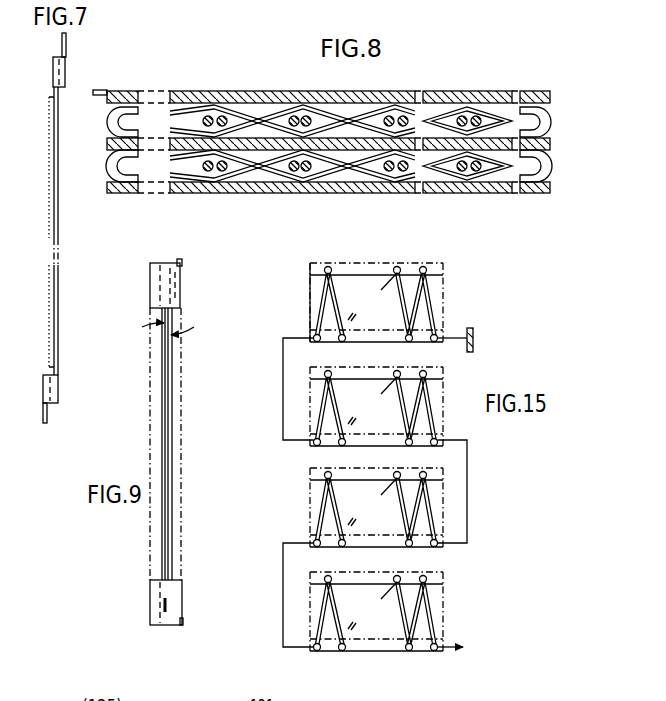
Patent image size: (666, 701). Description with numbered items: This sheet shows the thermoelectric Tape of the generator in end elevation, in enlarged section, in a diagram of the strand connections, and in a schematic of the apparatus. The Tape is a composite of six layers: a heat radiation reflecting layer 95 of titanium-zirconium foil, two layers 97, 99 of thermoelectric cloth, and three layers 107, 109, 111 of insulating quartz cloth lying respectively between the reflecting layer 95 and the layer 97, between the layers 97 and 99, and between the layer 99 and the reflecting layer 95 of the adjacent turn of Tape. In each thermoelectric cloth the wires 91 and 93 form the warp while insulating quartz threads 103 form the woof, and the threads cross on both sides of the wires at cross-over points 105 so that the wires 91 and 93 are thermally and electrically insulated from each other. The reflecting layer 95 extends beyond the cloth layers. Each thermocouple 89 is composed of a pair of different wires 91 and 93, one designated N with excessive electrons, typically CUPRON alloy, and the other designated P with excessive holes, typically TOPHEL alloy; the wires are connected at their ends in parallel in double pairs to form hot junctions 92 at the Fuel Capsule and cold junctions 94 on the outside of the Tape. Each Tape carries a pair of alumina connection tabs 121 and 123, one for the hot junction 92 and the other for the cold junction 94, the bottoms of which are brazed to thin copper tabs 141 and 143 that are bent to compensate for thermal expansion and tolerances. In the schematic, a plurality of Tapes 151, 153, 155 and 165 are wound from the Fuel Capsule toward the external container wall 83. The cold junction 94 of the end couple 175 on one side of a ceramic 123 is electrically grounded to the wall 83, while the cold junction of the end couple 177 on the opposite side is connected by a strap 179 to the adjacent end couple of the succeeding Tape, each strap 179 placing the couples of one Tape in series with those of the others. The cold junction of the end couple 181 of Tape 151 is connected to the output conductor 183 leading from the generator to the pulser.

In FIG. 15, the external container wall 83 is at (473, 340).
In FIG. 9, the thermocouple 89 is at (161, 352).
In FIG. 8, the wire 91 is at (403, 118).
In FIG. 9, the wire 91 is at (173, 432).
In FIG. 15, the wire 91 is at (430, 327).
In FIG. 9, the hot junction 92 is at (163, 264).
In FIG. 15, the hot junction 92 is at (437, 274).
In FIG. 8, the wire 93 is at (307, 118).
In FIG. 9, the wire 93 is at (165, 443).
In FIG. 15, the wire 93 is at (418, 290).
In FIG. 9, the cold junction 94 is at (168, 603).
In FIG. 15, the cold junction 94 is at (377, 342).
In FIG. 7, the heat radiation reflecting layer 95 is at (50, 137).
In FIG. 8, the heat radiation reflecting layer 95 is at (244, 110).
In FIG. 8, the thermoelectric cloth layer 97 is at (246, 110).
In FIG. 8, the thermoelectric cloth layer 99 is at (272, 176).
In FIG. 8, the insulating thread 103 is at (491, 114).
In FIG. 8, the cross-over point 105 is at (260, 120).
In FIG. 8, the insulating cloth layer 107 is at (433, 100).
In FIG. 8, the insulating cloth layer 109 is at (350, 146).
In FIG. 8, the insulating cloth layer 111 is at (380, 190).
In FIG. 7, the ceramic connection tab 121 is at (53, 72).
In FIG. 9, the ceramic connection tab 121 is at (152, 285).
In FIG. 7, the ceramic connection tab 123 is at (55, 400).
In FIG. 9, the ceramic connection tab 123 is at (152, 597).
In FIG. 7, the copper tab 141 is at (65, 55).
In FIG. 9, the copper tab 141 is at (182, 265).
In FIG. 7, the copper tab 143 is at (47, 412).
In FIG. 9, the copper tab 143 is at (181, 622).
In FIG. 15, the Tape 151 is at (373, 310).
In FIG. 15, the Tape 153 is at (372, 403).
In FIG. 15, the Tape 155 is at (372, 508).
In FIG. 15, the thermoelectric module 165 is at (370, 615).
In FIG. 15, the end couple 175 is at (430, 303).
In FIG. 15, the end couple 177 is at (322, 298).
In FIG. 15, the strap 179 is at (283, 366).
In FIG. 15, the end couple 181 is at (430, 617).
In FIG. 15, the output conductor 183 is at (452, 648).